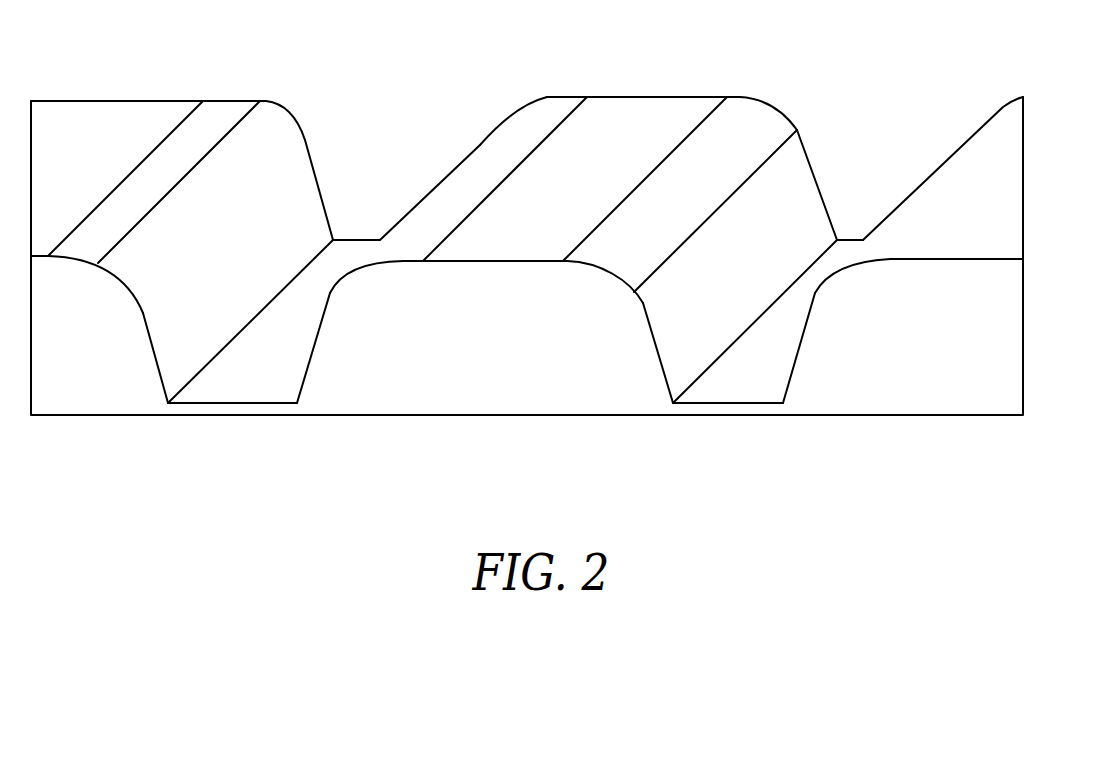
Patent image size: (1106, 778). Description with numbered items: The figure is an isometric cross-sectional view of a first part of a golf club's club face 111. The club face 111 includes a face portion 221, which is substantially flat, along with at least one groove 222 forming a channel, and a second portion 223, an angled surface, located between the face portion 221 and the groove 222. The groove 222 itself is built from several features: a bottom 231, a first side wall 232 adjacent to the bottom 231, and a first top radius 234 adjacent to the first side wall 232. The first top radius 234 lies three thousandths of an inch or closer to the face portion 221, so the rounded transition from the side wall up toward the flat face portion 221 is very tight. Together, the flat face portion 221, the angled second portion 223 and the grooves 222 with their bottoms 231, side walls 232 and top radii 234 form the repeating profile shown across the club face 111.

The club face 111 is at (995, 521).
The face portion 221 is at (124, 100).
The groove 222 is at (392, 109).
The second portion 223 is at (224, 100).
The bottom 231 is at (258, 393).
The first side wall 232 is at (172, 353).
The first top radius 234 is at (117, 277).